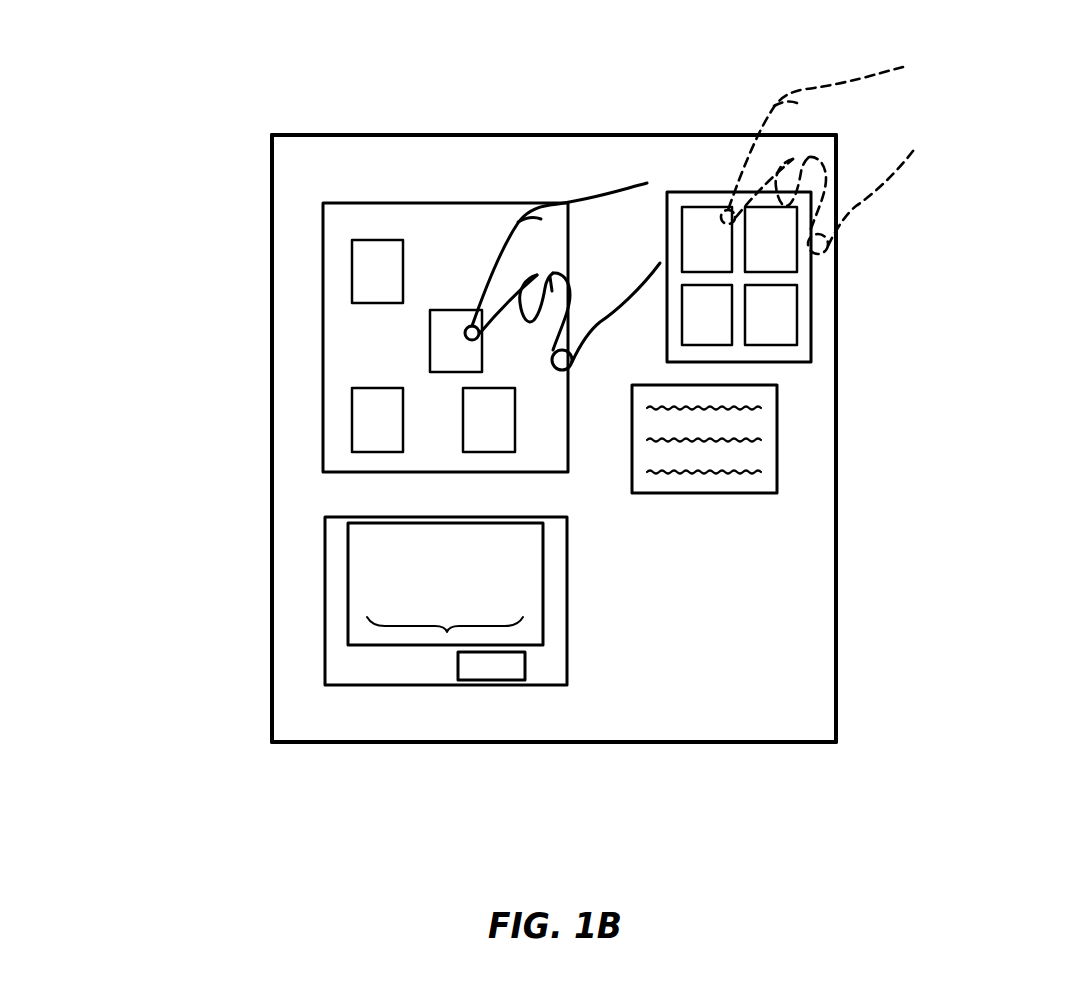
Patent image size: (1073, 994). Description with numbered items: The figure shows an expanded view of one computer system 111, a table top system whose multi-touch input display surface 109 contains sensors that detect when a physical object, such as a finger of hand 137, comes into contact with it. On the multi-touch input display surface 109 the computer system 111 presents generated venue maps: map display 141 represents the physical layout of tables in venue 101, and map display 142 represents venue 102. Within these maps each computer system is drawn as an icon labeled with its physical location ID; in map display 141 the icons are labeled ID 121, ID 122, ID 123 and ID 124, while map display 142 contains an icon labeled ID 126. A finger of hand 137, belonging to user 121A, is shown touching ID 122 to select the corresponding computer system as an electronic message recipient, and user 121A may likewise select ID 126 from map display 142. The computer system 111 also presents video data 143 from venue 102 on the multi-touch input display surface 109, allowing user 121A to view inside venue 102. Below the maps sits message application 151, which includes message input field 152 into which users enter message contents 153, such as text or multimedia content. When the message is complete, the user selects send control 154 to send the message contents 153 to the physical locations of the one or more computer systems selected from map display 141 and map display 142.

The multi-touch input display surface 109 is at (340, 160).
The computer system 111 is at (836, 671).
The map display 141 is at (445, 267).
The venue 101 is at (483, 227).
The map display 142 is at (870, 277).
The venue 102 is at (867, 277).
The video data 143 is at (777, 440).
The ID 121 is at (397, 298).
The ID 122 is at (476, 368).
The ID 123 is at (397, 446).
The ID 124 is at (509, 446).
The ID 126 is at (707, 239).
The hand 137 is at (690, 203).
The user 121A is at (863, 112).
The message application 151 is at (325, 558).
The message input field 152 is at (348, 600).
The message contents 153 is at (447, 632).
The send control 154 is at (490, 681).